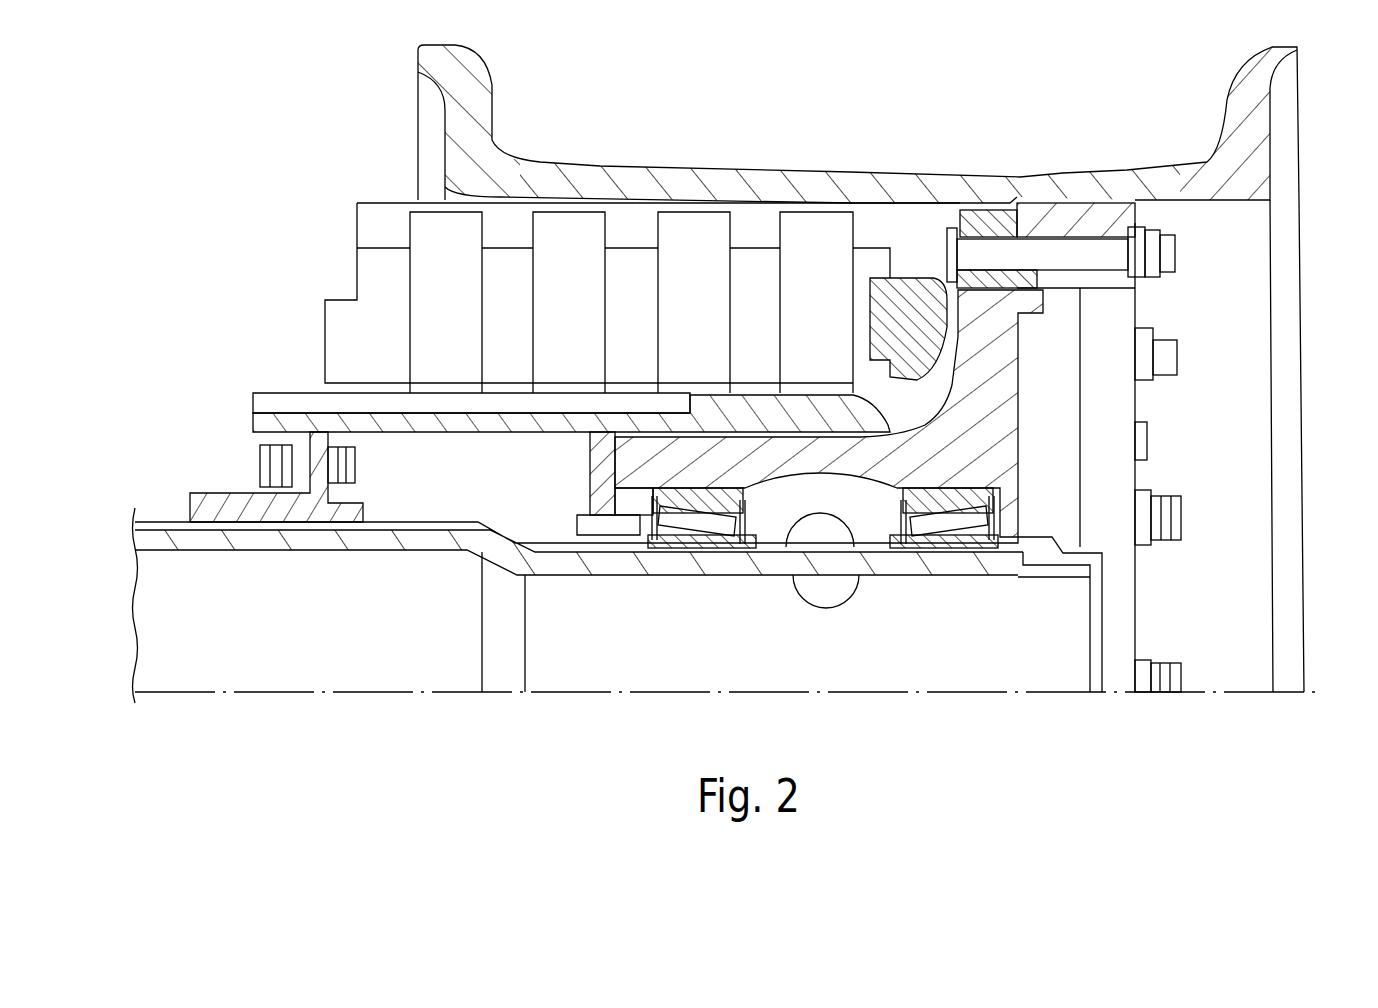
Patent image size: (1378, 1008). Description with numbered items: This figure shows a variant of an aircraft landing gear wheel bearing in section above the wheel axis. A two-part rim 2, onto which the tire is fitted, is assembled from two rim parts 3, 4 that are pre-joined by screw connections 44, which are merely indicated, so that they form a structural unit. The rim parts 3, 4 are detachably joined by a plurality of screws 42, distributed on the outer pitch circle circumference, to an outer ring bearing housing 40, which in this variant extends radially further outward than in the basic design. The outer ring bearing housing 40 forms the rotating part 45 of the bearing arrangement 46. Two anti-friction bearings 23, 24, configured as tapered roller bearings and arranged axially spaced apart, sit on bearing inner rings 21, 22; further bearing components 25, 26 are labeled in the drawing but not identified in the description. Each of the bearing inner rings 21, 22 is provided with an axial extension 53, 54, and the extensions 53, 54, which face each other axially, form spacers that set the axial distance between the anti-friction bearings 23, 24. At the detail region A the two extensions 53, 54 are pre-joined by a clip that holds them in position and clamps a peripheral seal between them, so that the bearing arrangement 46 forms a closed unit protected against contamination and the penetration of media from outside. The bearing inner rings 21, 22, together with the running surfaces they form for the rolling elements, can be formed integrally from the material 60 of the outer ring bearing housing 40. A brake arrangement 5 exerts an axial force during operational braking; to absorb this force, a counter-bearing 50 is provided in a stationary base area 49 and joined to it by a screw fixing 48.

The two-part rim 2 is at (771, 138).
The rim part 3 is at (638, 185).
The rim part 4 is at (1220, 106).
The brake arrangement 5 is at (316, 231).
The bearing inner ring 21 is at (697, 568).
The bearing inner ring 22 is at (946, 568).
The anti-friction bearing 23 is at (727, 560).
The anti-friction bearing 24 is at (953, 565).
The outer ring of first bearing 25 is at (670, 560).
The outer ring of second bearing 26 is at (983, 560).
The outer ring bearing housing 40 is at (988, 225).
The screws 42 is at (1168, 248).
The screw connections 44 is at (1147, 437).
The rotating part 45 is at (1232, 332).
The bearing arrangement 46 is at (1192, 620).
The screw fixing 48 is at (255, 458).
The stationary base area 49 is at (513, 422).
The counter-bearing 50 is at (905, 300).
The axial extension 53 is at (773, 563).
The axial extension 54 is at (870, 563).
The material of the outer ring bearing housing 60 is at (993, 443).
The detail view A is at (826, 605).